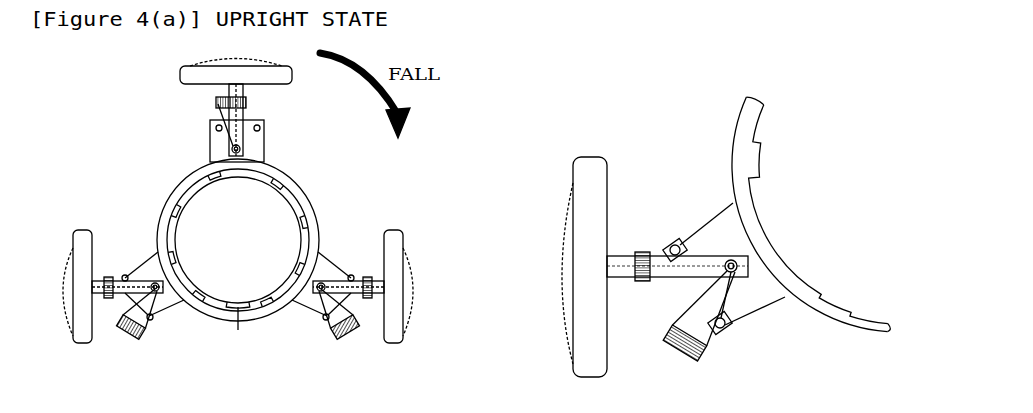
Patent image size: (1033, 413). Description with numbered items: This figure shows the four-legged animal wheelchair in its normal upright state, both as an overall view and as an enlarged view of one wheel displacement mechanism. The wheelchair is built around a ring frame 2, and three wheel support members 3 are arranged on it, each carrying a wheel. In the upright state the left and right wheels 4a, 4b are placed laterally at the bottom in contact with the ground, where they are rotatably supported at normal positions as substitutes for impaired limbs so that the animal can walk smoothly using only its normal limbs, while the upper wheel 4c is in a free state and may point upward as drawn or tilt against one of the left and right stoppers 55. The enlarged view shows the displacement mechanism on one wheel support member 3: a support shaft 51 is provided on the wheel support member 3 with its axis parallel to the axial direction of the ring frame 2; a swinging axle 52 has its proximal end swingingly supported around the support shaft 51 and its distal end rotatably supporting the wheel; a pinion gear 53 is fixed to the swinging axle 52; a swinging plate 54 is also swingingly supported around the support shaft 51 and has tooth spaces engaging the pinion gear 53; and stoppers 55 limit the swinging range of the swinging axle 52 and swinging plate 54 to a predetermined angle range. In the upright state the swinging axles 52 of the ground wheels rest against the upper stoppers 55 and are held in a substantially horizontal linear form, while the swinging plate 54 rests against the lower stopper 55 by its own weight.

The ring frame 2 is at (236, 312).
The wheel support member 3 is at (203, 170).
The wheel 4a is at (84, 231).
The wheel 4b is at (401, 238).
The upper wheel 4c is at (180, 78).
The support shaft 51 is at (727, 270).
The swinging axle 52 is at (716, 256).
The pinion gear 53 is at (649, 252).
The swinging plate 54 is at (700, 352).
The stopper 55 is at (680, 244).